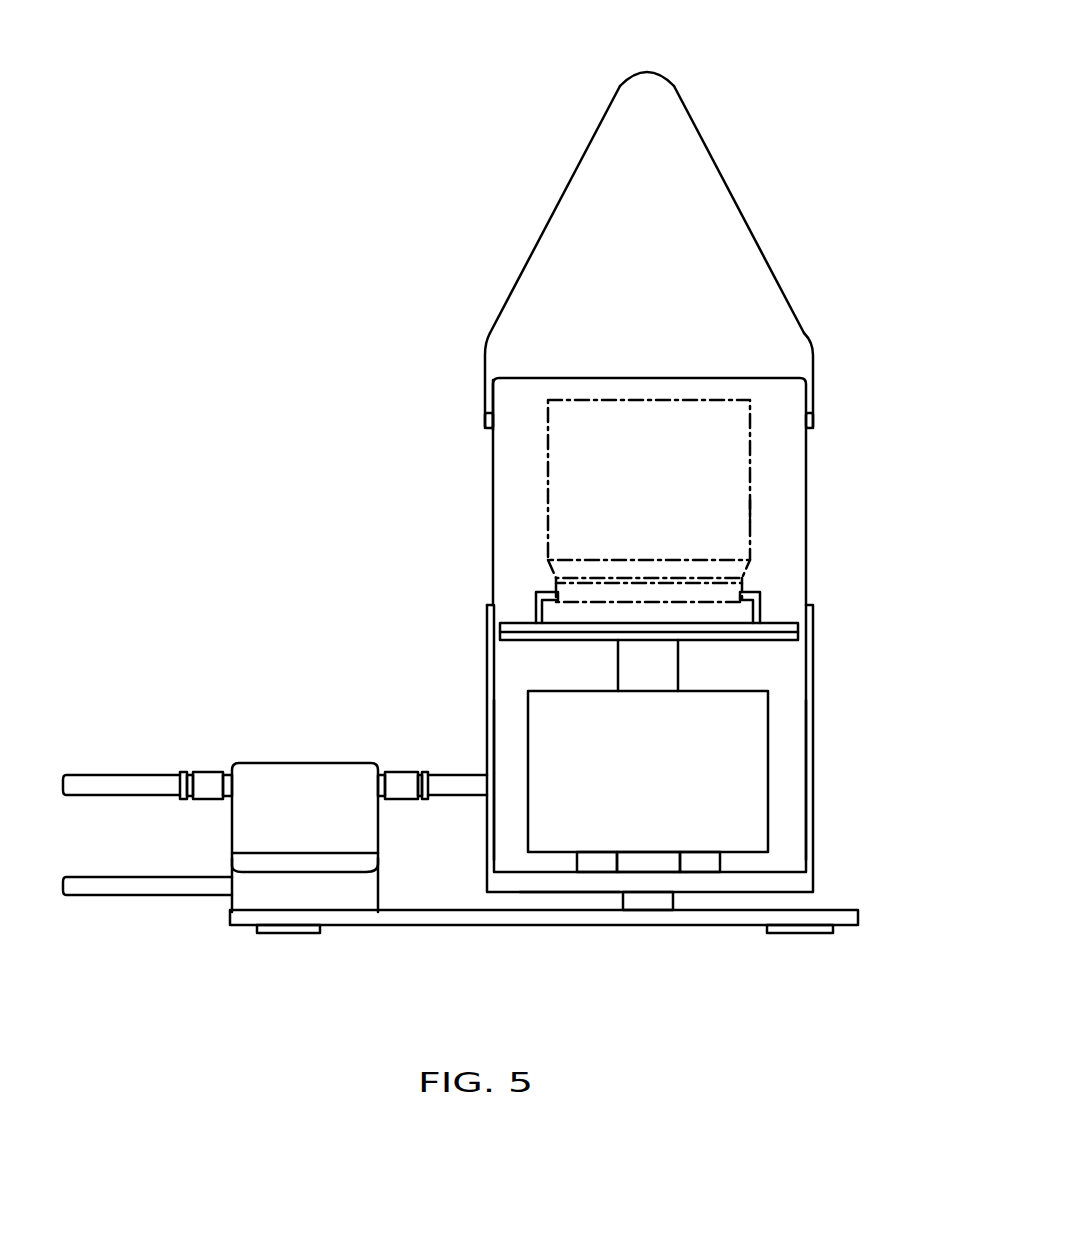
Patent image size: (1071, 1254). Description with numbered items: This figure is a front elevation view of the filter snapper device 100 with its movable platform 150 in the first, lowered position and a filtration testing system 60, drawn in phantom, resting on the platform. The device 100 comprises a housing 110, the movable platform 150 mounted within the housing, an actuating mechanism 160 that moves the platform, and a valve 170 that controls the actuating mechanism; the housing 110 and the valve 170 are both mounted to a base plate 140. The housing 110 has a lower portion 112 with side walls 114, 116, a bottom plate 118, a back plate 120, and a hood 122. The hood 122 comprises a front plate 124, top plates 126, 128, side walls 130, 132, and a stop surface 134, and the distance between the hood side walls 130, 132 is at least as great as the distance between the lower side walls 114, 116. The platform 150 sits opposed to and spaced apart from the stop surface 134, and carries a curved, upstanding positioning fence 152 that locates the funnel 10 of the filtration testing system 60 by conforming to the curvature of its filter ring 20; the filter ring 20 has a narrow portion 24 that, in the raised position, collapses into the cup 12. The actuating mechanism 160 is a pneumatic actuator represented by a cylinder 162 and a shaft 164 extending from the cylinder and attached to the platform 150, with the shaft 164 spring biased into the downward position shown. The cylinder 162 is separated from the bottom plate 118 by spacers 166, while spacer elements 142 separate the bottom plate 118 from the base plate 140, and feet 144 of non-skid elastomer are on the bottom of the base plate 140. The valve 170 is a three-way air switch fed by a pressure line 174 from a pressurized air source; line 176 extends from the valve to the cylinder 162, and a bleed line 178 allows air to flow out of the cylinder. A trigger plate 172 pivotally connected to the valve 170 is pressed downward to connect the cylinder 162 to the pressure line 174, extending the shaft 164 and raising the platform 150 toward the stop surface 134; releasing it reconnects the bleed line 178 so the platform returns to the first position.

The filter snapper device 100 is at (288, 462).
The housing 110 is at (811, 326).
The hood 122 is at (673, 74).
The front plate 124 is at (680, 274).
The top plate 126 is at (758, 228).
The top plate 128 is at (562, 196).
The side wall 130 is at (813, 388).
The side wall 132 is at (484, 407).
The stop surface 134 is at (530, 378).
The funnel 10 is at (758, 473).
The cup 12 is at (752, 513).
The filtration testing system 60 is at (625, 432).
The back plate 120 is at (795, 546).
The narrow portion 24 is at (745, 586).
The filter ring 20 is at (758, 612).
The movable platform 150 is at (510, 620).
The positioning fence 152 is at (537, 604).
The lower portion 112 is at (816, 722).
The side wall 114 is at (815, 815).
The side wall 116 is at (490, 815).
The bottom plate 118 is at (524, 883).
The actuating mechanism 160 is at (782, 700).
The cylinder 162 is at (771, 763).
The shaft 164 is at (680, 660).
The spacers 166 is at (722, 862).
The spacer elements 142 is at (622, 900).
The base plate 140 is at (415, 928).
The feet 144 is at (296, 935).
The valve 170 is at (305, 758).
The trigger plate 172 is at (250, 836).
The pressure line 174 is at (103, 773).
The line 176 is at (440, 773).
The bleed line 178 is at (125, 898).